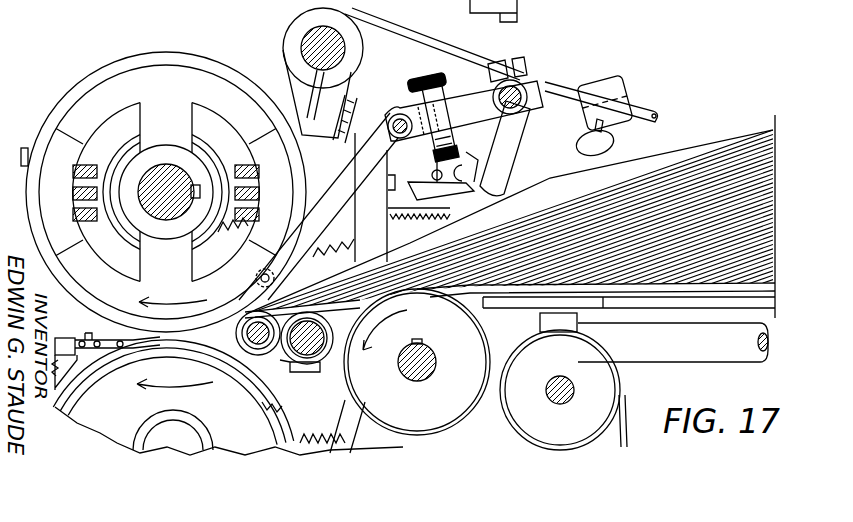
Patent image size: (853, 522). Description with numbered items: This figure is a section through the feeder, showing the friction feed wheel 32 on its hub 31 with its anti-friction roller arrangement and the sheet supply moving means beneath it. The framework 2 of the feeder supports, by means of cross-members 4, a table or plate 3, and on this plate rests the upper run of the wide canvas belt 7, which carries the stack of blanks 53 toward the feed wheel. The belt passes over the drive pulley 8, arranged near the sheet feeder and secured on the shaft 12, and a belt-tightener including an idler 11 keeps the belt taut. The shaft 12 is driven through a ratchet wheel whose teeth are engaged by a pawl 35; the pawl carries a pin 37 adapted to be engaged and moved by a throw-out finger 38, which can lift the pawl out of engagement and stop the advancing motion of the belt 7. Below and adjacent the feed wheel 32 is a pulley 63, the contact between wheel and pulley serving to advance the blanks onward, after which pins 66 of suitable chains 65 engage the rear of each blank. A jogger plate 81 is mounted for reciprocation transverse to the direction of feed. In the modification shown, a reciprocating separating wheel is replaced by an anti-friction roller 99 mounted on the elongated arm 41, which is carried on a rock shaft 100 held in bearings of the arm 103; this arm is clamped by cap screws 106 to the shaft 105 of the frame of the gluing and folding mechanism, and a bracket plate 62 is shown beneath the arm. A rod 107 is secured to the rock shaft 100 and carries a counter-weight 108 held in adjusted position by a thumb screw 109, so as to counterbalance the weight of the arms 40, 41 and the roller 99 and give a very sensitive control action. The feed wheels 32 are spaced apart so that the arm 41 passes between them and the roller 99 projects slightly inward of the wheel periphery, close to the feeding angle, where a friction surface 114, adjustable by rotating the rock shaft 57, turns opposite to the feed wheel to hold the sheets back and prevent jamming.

The framework 2 is at (742, 350).
The table or plate 3 is at (710, 292).
The cross-members 4 is at (22, 155).
The canvas belt 7 is at (777, 285).
The drive pulley 8 is at (437, 300).
The idler 11 is at (555, 336).
The shaft 12 is at (427, 370).
The shaft 31 is at (166, 192).
The feed wheel 32 is at (72, 95).
The pawl 35 is at (398, 196).
The pin 37 is at (440, 174).
The throw-out finger 38 is at (504, 157).
The arm 40 is at (464, 111).
The arm 41 is at (318, 206).
The stack of sheets 53 is at (723, 132).
The rock shaft 57 is at (315, 368).
The plate 62 is at (450, 178).
The pulley 63 is at (100, 425).
The chains 65 is at (105, 350).
The pins 66 is at (86, 338).
The jogger plate 81 is at (320, 300).
The anti-friction roller 99 is at (258, 272).
The rock shaft 100 is at (516, 72).
The arm 103 is at (413, 50).
The shaft 105 is at (322, 48).
The cap screws 106 is at (342, 117).
The rod 107 is at (651, 109).
The counter-weight 108 is at (612, 88).
The thumb screw 109 is at (252, 348).
The friction surface 114 is at (186, 303).